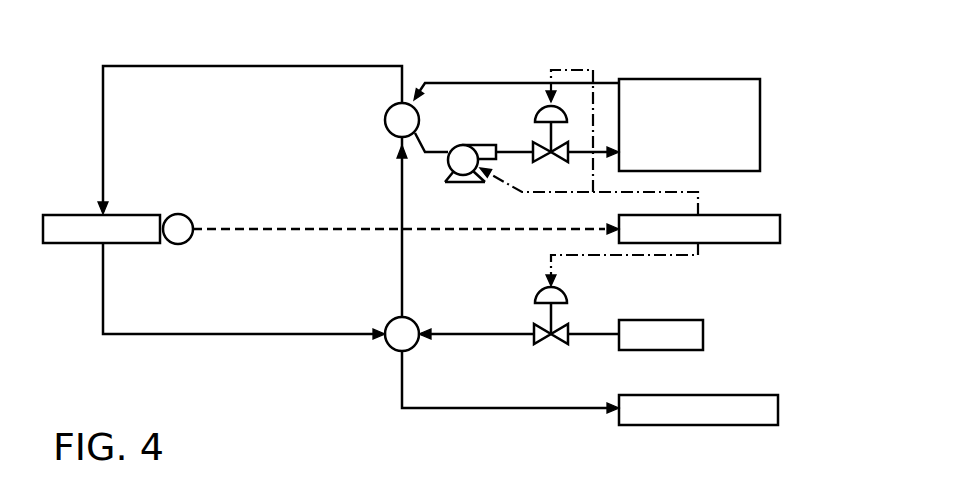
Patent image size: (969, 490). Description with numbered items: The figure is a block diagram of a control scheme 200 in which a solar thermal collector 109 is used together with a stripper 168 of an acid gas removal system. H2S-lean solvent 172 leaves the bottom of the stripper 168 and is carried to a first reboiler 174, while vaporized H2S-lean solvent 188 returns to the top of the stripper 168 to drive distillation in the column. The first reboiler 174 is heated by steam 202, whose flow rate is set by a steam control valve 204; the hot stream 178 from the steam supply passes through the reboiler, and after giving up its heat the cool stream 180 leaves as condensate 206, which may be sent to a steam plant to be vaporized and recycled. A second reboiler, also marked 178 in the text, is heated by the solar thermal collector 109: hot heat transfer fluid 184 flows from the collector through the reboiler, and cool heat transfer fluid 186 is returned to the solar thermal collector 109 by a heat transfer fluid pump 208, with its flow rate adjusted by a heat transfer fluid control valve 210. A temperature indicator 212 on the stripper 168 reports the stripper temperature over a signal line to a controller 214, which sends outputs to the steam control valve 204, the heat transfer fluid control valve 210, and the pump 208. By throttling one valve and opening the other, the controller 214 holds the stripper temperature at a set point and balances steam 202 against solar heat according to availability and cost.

The control scheme 200 is at (575, 35).
The vaporized H2S-lean solvent 188 is at (253, 67).
The stripper 168 is at (73, 244).
The temperature indicator 212 is at (184, 214).
The hot stream 178 is at (390, 133).
The hot heat transfer fluid 184 is at (448, 83).
The cool heat transfer fluid 186 is at (433, 150).
The heat transfer fluid pump 208 is at (458, 183).
The heat transfer fluid control valve 210 is at (545, 103).
The solar thermal collector 109 is at (760, 125).
The controller 214 is at (780, 232).
The H2S-lean solvent 172 is at (172, 336).
The first reboiler 174 is at (388, 348).
The steam control valve 204 is at (538, 292).
The steam 202 is at (703, 335).
The cool stream 180 is at (505, 410).
The condensate 206 is at (778, 410).